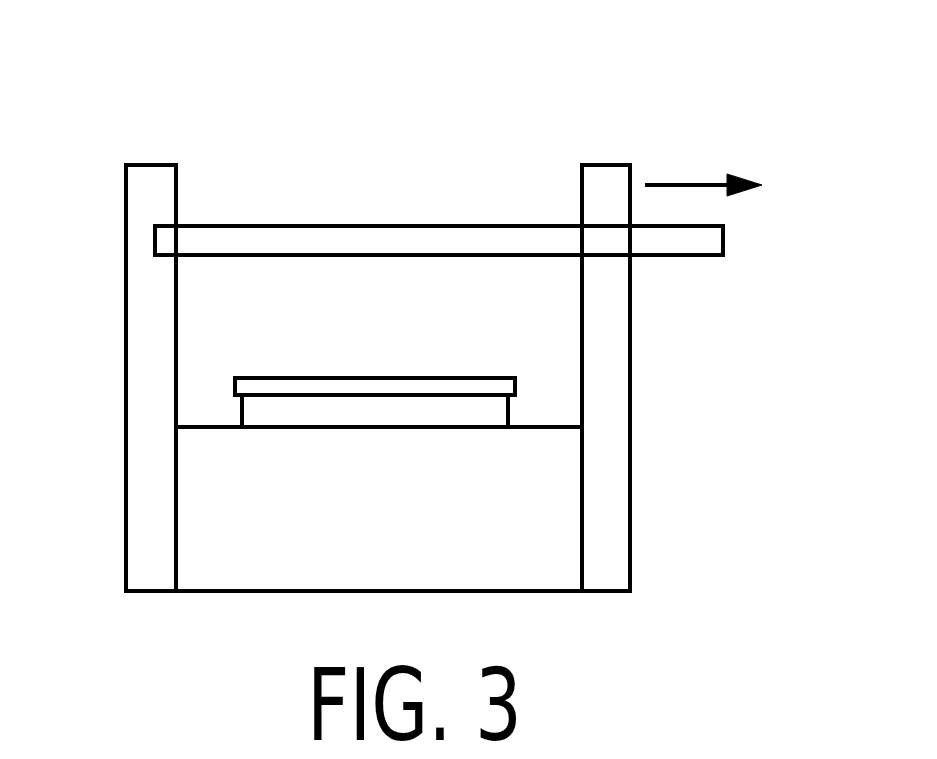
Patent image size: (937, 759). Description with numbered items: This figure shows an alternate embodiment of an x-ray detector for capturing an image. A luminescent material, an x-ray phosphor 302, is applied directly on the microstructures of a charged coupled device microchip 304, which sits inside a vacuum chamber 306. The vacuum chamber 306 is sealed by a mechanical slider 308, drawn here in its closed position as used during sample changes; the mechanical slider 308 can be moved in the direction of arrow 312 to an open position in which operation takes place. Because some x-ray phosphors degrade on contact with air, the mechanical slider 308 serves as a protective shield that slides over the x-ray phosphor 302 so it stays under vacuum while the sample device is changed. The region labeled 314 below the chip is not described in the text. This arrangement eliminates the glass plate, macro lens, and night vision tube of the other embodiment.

The x-ray phosphor 302 is at (446, 378).
The charged coupled device (CCD) microchip 304 is at (508, 410).
The vacuum chamber 306 is at (200, 313).
The mechanical slider 308 is at (723, 238).
The arrow 312 is at (695, 183).
The base / lower chamber region 314 is at (550, 494).